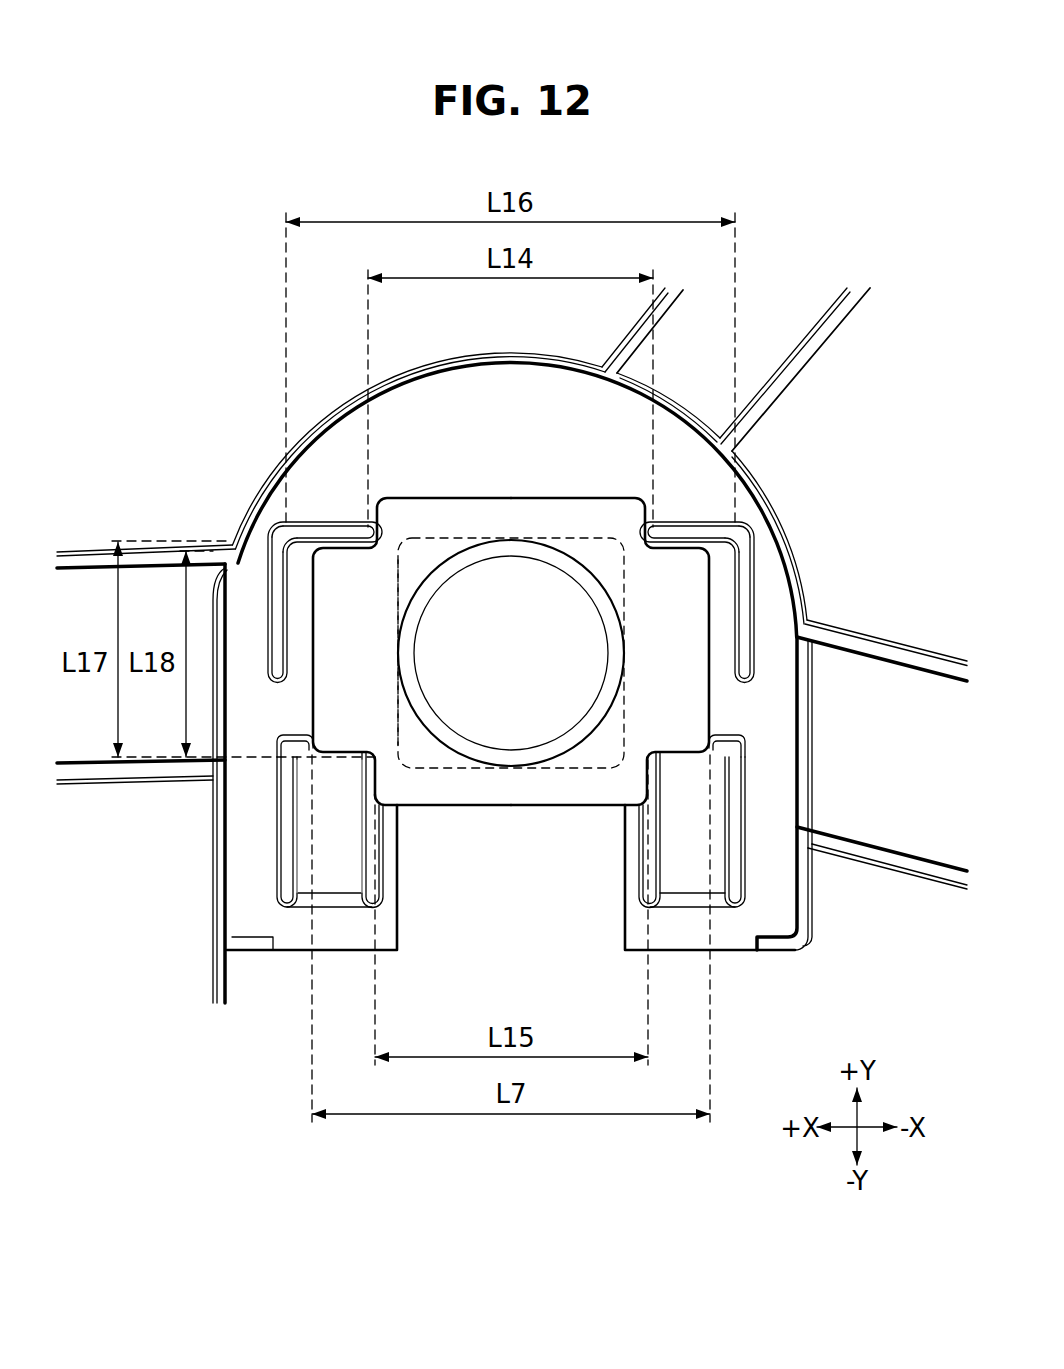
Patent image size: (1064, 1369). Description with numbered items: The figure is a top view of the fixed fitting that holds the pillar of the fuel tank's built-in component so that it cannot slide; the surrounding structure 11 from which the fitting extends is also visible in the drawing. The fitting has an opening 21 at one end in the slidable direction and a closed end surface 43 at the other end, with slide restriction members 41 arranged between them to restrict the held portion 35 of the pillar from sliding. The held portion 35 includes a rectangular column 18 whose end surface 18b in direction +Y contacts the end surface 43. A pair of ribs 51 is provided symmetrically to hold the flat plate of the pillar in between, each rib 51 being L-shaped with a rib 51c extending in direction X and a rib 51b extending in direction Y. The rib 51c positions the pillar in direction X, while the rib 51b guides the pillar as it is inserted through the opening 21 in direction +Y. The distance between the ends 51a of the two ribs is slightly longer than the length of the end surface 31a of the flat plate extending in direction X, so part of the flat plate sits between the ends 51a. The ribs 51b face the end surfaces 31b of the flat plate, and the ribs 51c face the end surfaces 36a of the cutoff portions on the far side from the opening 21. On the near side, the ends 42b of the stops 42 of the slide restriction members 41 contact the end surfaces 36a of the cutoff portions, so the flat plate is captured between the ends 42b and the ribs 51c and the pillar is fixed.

The housing 11 is at (818, 353).
The rectangular column 18 is at (625, 582).
The end surface 18b is at (585, 530).
The opening 21 is at (465, 951).
The end surface 31a is at (506, 497).
The end surface 31b is at (313, 700).
The held portion 35 is at (470, 822).
The end surface 36a is at (353, 540).
The slide restriction member 41 is at (333, 857).
The stop 42 is at (511, 830).
The end 42b is at (290, 750).
The end surface 43 is at (460, 530).
The rib 51 is at (272, 526).
The end 51a is at (400, 518).
The rib 51b is at (277, 655).
The rib 51c is at (336, 516).